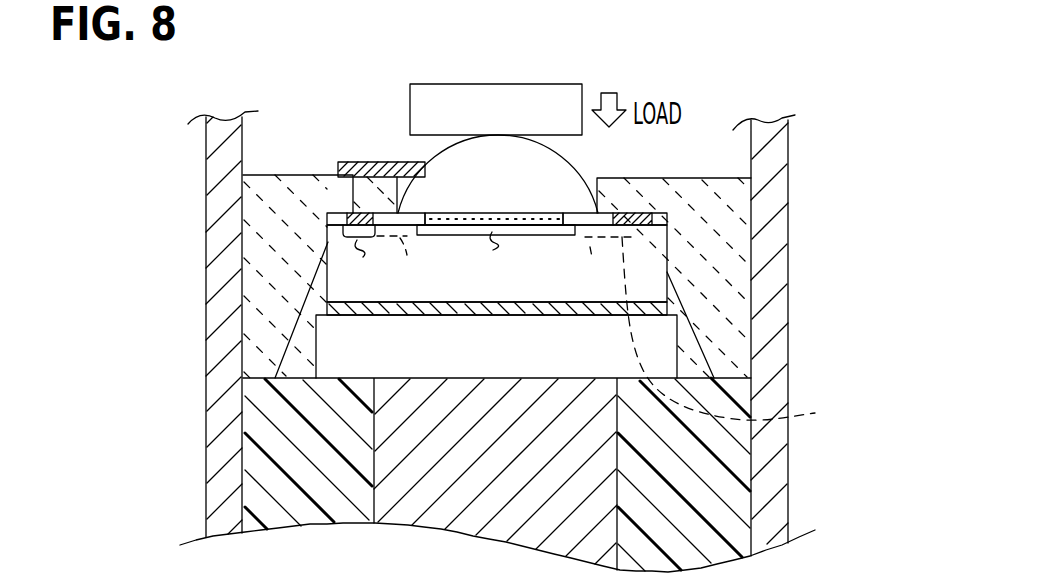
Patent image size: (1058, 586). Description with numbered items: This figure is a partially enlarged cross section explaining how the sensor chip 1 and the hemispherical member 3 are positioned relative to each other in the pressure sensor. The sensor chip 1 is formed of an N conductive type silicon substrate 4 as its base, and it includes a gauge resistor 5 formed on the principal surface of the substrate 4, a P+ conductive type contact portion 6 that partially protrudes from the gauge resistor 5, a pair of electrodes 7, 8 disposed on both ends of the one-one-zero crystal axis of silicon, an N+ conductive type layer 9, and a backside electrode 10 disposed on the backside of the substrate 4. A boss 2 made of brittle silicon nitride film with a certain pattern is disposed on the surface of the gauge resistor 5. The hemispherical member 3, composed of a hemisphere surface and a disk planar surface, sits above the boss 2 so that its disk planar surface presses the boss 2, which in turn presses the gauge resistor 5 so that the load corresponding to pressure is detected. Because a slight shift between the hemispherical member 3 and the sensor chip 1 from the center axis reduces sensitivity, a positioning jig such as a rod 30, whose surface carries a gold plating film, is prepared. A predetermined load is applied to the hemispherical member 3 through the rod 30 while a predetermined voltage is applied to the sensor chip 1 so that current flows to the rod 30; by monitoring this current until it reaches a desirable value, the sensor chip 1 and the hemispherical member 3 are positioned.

The sensor chip 1 is at (657, 246).
The boss 2 is at (597, 192).
The hemispherical member 3 is at (547, 173).
The silicon substrate 4 is at (657, 267).
The gauge resistor 5 is at (458, 232).
The contact portion 6 is at (350, 195).
The electrode 7 is at (647, 214).
The electrode 8 is at (327, 216).
The N+ conductive type layer 9 is at (353, 235).
The backside electrode 10 is at (657, 311).
The rod 30 is at (538, 93).